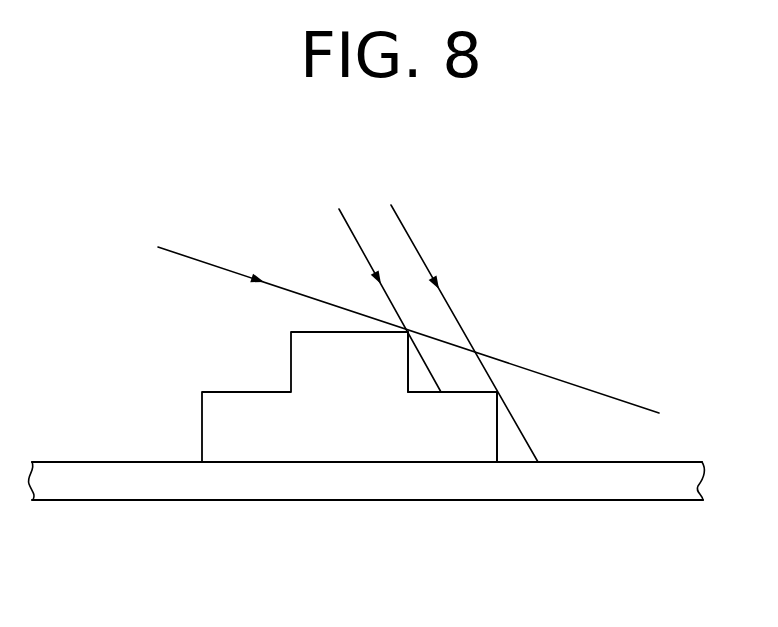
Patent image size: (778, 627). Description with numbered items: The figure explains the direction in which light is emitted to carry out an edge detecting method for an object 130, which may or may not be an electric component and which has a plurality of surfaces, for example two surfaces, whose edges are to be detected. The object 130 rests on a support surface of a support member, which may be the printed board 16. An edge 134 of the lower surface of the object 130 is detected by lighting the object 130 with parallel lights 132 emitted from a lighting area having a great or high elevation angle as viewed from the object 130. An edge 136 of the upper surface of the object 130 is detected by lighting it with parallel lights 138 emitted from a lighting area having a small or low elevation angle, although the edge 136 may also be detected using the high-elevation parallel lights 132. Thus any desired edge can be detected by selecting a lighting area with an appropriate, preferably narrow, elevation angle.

The printed board 16 is at (420, 490).
The object 130 is at (213, 428).
The parallel lights 132 is at (348, 228).
The edge of the lower surface 134 is at (501, 385).
The edge of the upper surface 136 is at (408, 332).
The parallel lights 138 is at (193, 258).